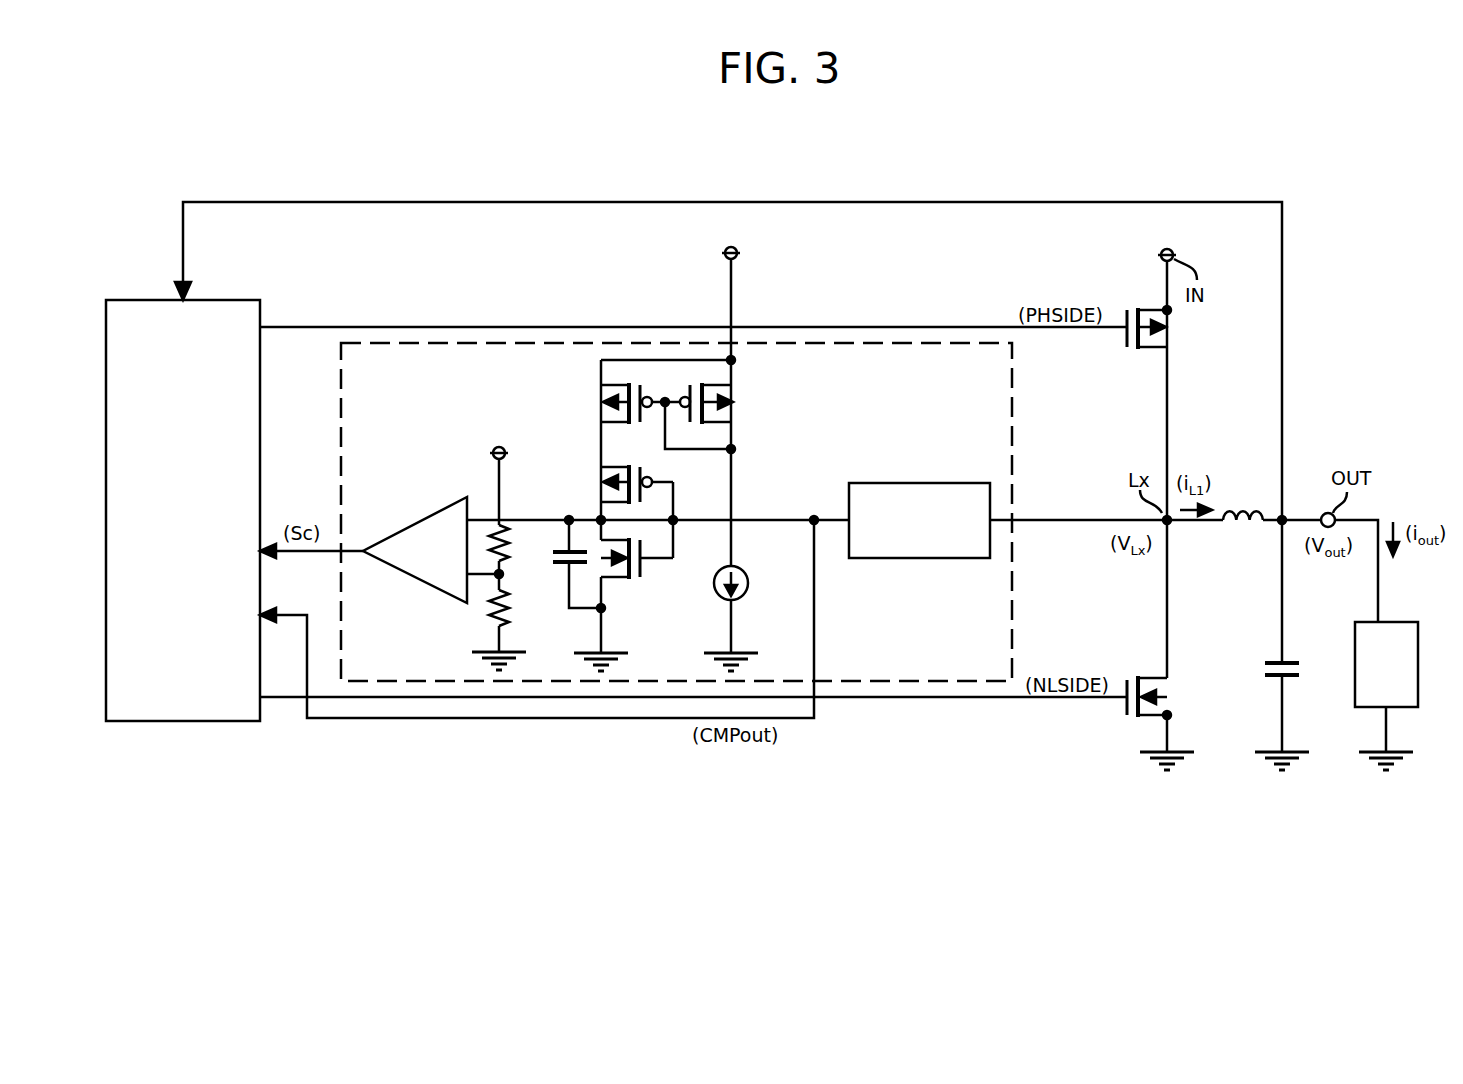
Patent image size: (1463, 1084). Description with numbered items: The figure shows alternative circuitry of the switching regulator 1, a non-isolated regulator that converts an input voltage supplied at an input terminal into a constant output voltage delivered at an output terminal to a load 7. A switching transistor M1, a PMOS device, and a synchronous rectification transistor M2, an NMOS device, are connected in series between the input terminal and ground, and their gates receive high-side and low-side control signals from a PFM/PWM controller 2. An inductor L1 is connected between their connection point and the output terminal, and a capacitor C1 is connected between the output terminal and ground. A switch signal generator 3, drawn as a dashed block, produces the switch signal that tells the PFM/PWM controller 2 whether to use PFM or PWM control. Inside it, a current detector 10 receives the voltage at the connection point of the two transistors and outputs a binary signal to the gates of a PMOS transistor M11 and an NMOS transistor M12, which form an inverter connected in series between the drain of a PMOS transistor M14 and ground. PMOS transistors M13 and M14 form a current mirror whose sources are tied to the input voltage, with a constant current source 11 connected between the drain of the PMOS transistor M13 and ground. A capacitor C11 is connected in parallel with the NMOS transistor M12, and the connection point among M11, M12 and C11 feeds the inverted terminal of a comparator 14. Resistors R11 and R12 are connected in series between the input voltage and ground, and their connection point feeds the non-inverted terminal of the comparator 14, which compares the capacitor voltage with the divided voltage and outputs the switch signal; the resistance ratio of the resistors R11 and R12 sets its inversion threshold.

The switching regulator 1 is at (832, 176).
The PFM/PWM controller 2 is at (243, 300).
The switch signal generator 3 is at (1034, 398).
The load 7 is at (1405, 622).
The current detector 10 is at (962, 483).
The constant current source 11 is at (742, 571).
The comparator 14 is at (430, 516).
The switching transistor M1 is at (1158, 451).
The synchronous rectification transistor M2 is at (1161, 729).
The PMOS transistor M11 is at (637, 472).
The NMOS transistor M12 is at (637, 569).
The PMOS transistor M13 is at (729, 403).
The PMOS transistor M14 is at (604, 403).
The resistor R11 is at (519, 543).
The resistor R12 is at (519, 612).
The capacitor C11 is at (564, 562).
The inductor L1 is at (1243, 497).
The capacitor C1 is at (1292, 645).